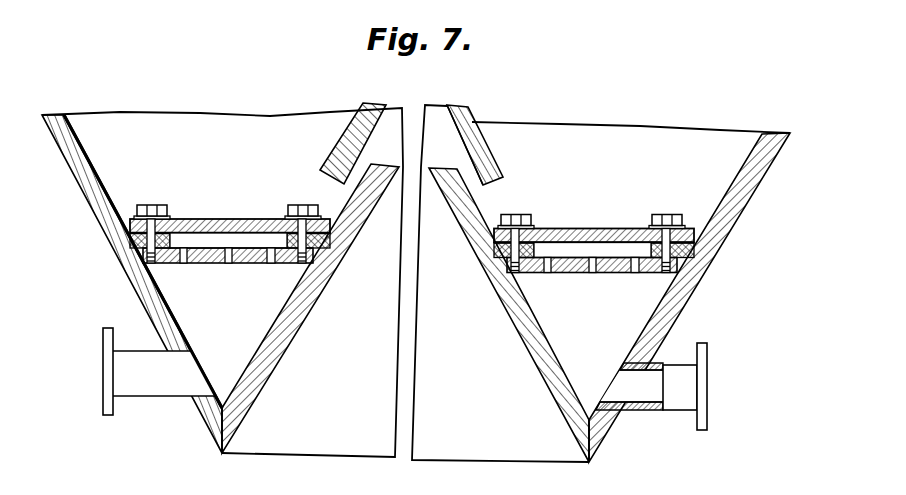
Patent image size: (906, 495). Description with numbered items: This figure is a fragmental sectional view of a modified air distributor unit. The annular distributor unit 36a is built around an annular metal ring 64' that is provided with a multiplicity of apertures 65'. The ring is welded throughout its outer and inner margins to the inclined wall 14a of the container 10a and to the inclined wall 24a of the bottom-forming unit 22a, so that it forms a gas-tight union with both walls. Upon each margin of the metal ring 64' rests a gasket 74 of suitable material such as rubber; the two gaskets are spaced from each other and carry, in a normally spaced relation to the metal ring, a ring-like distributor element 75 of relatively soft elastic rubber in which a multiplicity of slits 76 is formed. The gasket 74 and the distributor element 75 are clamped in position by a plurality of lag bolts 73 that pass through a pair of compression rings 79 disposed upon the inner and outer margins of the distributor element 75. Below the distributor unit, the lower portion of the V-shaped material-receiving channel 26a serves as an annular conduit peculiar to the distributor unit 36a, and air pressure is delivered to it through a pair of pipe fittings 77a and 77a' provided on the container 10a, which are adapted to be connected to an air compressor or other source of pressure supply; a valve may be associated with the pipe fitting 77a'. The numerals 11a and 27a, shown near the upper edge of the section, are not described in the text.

The container 10a is at (612, 126).
The side plate 11a is at (471, 123).
The inclined wall 14a is at (103, 204).
The bottom-forming unit 22a is at (222, 282).
The inclined wall 24a is at (508, 305).
The V-shaped material-receiving channel 26a is at (222, 392).
The flange 27a is at (483, 157).
The annular distributor unit 36a is at (247, 226).
The annular metal ring 64' is at (410, 271).
The apertures 65' is at (409, 271).
The lag bolts 73 is at (150, 204).
The gasket 74 is at (132, 238).
The ring-like distributor element 75 is at (192, 222).
The slits 76 is at (220, 223).
The pipe fitting 77a is at (651, 389).
The pipe fitting 77a' is at (143, 269).
The compression rings 79 is at (133, 214).